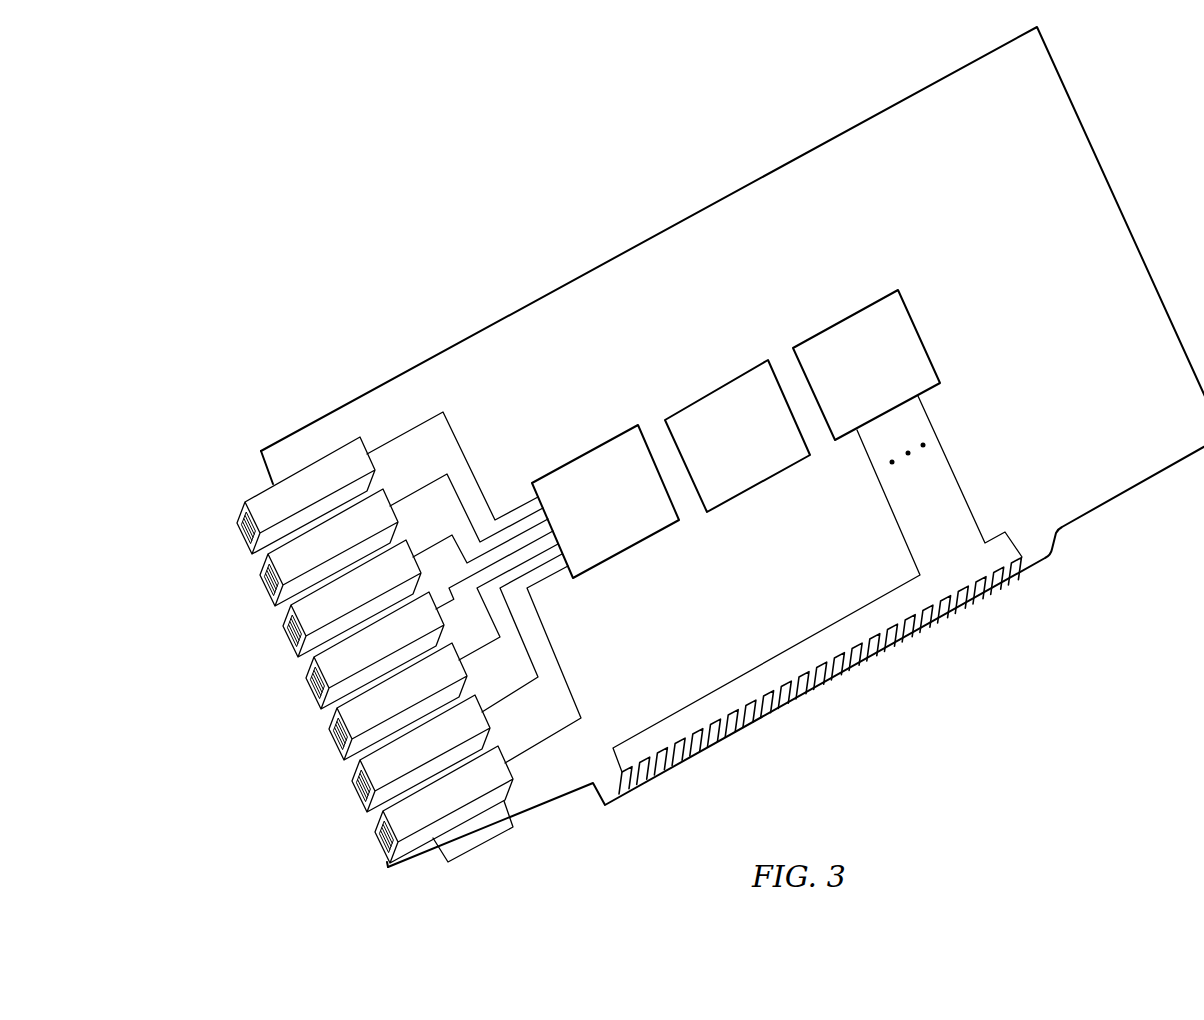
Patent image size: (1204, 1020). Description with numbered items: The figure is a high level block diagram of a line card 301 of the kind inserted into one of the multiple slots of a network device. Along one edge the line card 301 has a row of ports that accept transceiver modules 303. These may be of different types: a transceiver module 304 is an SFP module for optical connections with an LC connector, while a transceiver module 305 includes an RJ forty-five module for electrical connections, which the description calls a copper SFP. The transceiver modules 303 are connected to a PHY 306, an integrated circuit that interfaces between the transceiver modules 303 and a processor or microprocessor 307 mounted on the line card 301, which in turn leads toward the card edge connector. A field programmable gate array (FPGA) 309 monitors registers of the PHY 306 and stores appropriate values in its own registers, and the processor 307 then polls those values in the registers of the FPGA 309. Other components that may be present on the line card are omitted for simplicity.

The line card 301 is at (317, 346).
The transceiver modules 303 is at (523, 830).
The transceiver module 304 is at (253, 603).
The transceiver module 305 is at (225, 543).
The PHY physical layer device 306 is at (575, 455).
The processor 307 is at (867, 302).
The field programmable gate array (FPGA) 309 is at (712, 387).